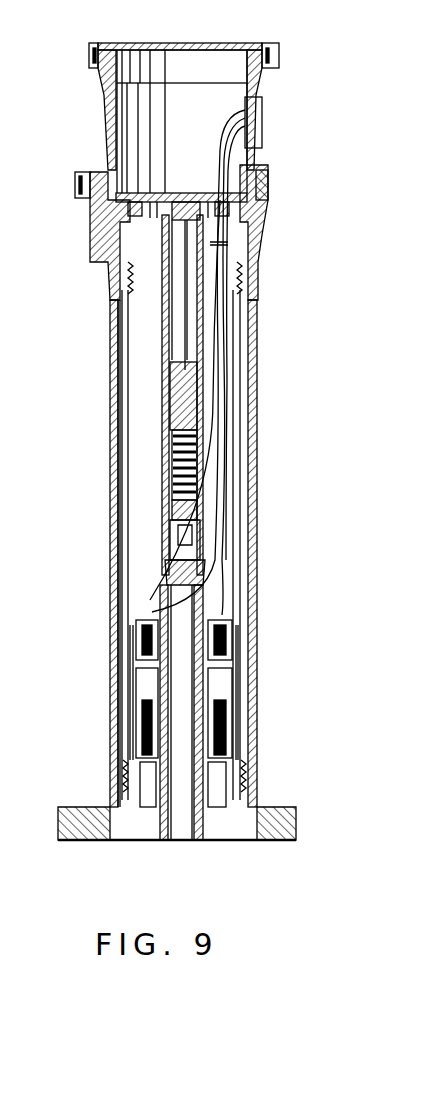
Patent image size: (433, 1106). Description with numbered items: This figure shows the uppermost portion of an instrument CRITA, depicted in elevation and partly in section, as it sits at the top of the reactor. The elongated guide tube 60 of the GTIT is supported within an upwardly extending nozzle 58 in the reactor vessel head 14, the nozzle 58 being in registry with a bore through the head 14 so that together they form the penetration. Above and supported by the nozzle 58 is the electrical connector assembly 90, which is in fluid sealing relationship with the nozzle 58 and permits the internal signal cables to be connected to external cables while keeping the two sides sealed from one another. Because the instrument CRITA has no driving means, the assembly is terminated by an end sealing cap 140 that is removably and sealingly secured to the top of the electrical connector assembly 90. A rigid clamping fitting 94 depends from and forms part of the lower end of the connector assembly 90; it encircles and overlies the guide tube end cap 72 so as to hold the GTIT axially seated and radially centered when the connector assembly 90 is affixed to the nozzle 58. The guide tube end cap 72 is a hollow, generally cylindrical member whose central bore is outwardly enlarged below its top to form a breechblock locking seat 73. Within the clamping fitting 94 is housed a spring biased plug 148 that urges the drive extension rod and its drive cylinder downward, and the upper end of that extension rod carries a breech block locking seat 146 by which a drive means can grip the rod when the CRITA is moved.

The end sealing cap 140 is at (196, 43).
The electrical connector assembly 90 is at (105, 130).
The nozzle 58 is at (255, 368).
The clamping fitting 94 is at (166, 390).
The spring biased plug 148 is at (175, 432).
The breech block locking seat 146 is at (178, 532).
The breechblock locking seat 73 is at (220, 615).
The guide tube end cap 72 is at (215, 688).
The reactor vessel head 14 is at (76, 810).
The guide tube 60 is at (258, 810).